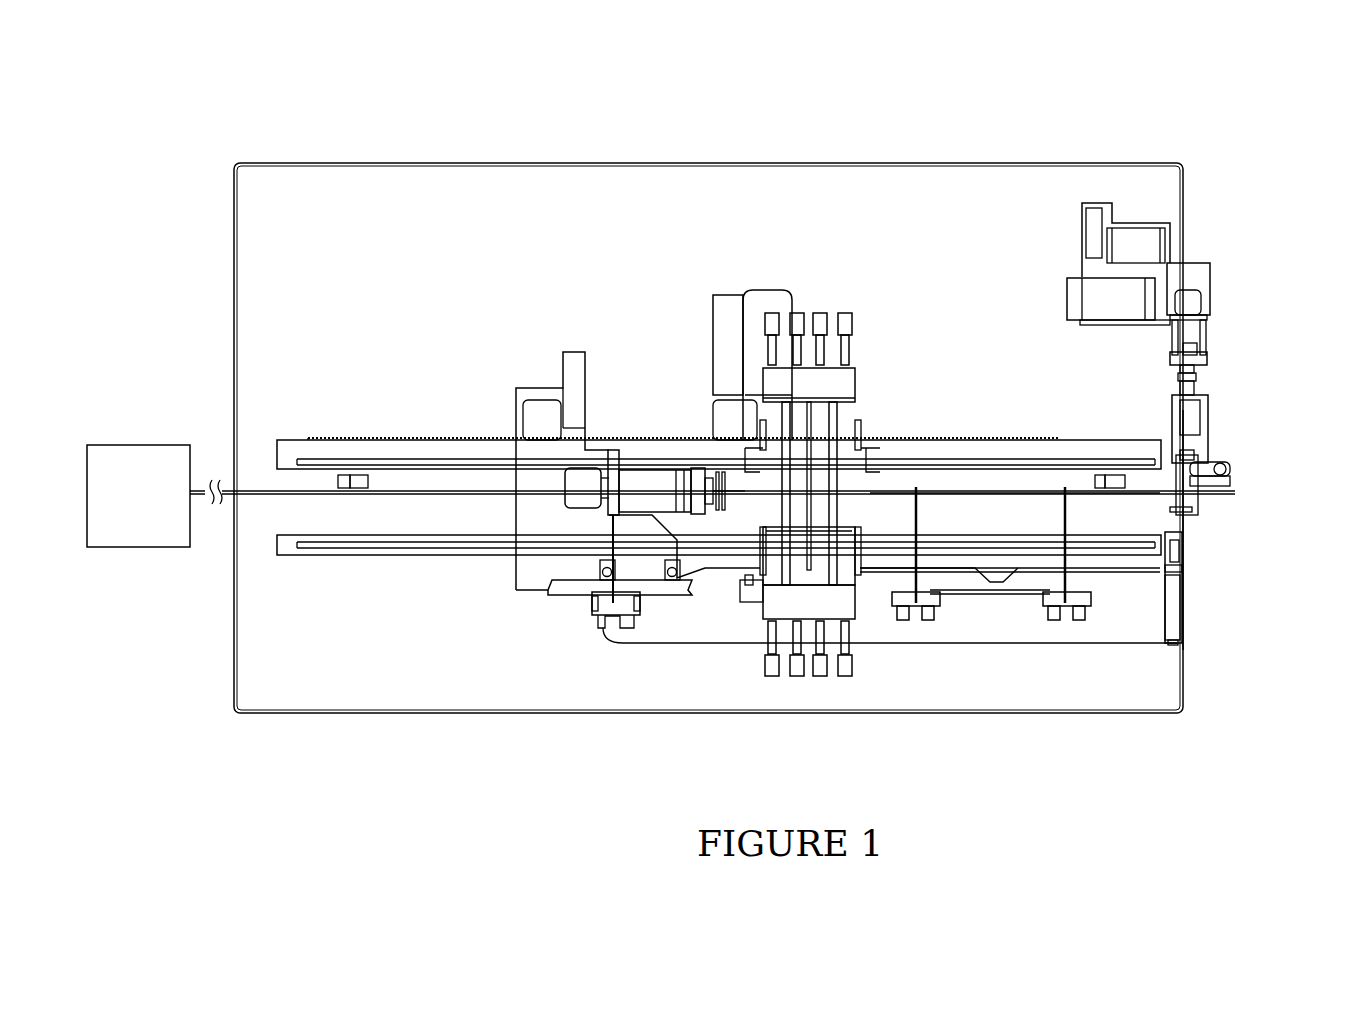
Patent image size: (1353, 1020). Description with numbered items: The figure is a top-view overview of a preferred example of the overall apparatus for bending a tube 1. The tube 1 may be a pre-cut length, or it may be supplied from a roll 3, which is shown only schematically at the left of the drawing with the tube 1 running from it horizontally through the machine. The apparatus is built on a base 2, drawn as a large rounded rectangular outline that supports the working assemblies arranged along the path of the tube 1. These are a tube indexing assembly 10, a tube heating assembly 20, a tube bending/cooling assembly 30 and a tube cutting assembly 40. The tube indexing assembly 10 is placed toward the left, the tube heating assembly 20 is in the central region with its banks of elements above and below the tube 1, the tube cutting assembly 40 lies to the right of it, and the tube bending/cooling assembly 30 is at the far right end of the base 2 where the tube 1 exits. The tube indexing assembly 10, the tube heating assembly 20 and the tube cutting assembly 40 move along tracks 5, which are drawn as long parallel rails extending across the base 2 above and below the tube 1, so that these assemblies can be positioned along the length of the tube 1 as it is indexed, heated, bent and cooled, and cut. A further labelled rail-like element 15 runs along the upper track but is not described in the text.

The tube 1 is at (1168, 555).
The base 2 is at (632, 185).
The roll 3 is at (178, 462).
The tracks 5 is at (293, 552).
The tube indexing assembly 10 is at (548, 548).
The upper rail 15 is at (632, 361).
The tube heating assembly 20 is at (857, 608).
The tube bending/cooling assembly 30 is at (1212, 288).
The tube cutting assembly 40 is at (1010, 353).